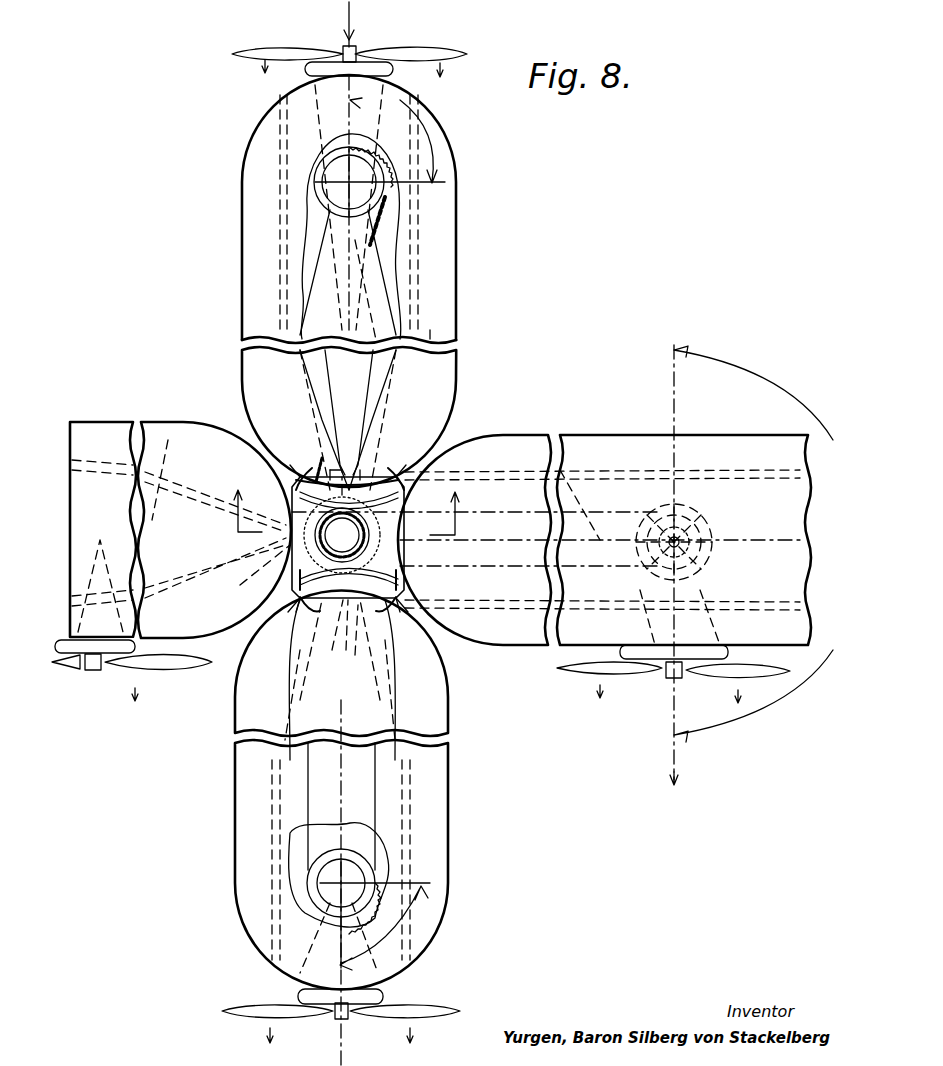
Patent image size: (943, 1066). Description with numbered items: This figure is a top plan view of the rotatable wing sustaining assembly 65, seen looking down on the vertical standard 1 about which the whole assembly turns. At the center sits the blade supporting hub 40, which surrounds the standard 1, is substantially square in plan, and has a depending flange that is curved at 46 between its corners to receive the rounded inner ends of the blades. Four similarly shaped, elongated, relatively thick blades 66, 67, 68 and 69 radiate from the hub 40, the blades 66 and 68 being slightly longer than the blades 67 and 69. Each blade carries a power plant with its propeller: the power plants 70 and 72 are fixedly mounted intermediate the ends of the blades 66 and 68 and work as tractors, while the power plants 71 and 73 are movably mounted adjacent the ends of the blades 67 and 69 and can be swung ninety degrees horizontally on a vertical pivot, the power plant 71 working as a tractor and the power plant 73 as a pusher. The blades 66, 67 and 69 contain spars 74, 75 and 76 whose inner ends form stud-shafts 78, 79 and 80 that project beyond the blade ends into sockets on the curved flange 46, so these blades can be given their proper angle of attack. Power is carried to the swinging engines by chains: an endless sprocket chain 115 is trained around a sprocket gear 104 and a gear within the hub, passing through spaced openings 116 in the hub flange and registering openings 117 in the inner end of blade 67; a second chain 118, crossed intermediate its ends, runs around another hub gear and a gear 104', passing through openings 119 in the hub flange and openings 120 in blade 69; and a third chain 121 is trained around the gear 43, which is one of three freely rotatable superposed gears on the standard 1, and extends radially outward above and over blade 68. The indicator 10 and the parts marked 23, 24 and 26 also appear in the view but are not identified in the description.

The vertical standard 1 is at (362, 542).
The direction of flight indicator 10 is at (348, 502).
The hollow arm tube 23 is at (672, 540).
The hollow arm tube 24 is at (428, 704).
The hollow arm tube 26 is at (430, 324).
The blade supporting hub 40 is at (402, 522).
The gear 43 is at (402, 506).
The curved portion of flange 46 is at (312, 476).
The wing sustaining assembly 65 is at (472, 362).
The blade 66 is at (103, 422).
The blade 67 is at (435, 825).
The blade 68 is at (528, 440).
The blade 69 is at (442, 207).
The power plant 70 is at (78, 652).
The power plant 71 is at (385, 995).
The power plant 72 is at (660, 672).
The power plant 73 is at (322, 77).
The spar 74 is at (170, 440).
The spar 75 is at (400, 775).
The spar 76 is at (420, 248).
The stud-shaft 78 is at (258, 568).
The stud-shaft 79 is at (345, 633).
The stud-shaft 80 is at (360, 470).
The sprocket gear 104 is at (401, 905).
The sprocket gear 104' is at (307, 158).
The endless sprocket chain 115 is at (325, 845).
The spaced openings 116 is at (298, 580).
The registering openings 117 is at (305, 600).
The second endless sprocket chain 118 is at (378, 213).
The spaced openings 119 is at (420, 478).
The registering openings 120 is at (318, 468).
The third endless sprocket chain 121 is at (562, 575).